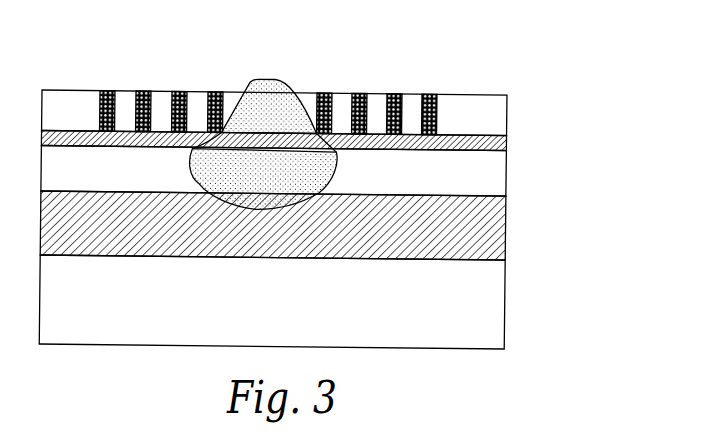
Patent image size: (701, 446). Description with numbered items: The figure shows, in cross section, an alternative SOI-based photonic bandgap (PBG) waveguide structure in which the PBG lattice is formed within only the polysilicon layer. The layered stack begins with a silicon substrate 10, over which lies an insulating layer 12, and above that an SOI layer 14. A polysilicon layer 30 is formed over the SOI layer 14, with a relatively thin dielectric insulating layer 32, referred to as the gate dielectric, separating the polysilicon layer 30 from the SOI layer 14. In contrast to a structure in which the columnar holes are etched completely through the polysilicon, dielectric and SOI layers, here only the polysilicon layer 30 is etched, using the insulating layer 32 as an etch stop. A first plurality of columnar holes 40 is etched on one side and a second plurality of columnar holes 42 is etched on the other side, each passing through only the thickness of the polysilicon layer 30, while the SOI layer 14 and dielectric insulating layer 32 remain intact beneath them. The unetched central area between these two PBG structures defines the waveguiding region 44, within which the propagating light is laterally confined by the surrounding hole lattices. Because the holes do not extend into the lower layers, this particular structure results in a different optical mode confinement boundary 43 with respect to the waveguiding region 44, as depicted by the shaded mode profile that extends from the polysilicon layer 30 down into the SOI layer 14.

The silicon substrate 10 is at (475, 307).
The insulating layer 12 is at (470, 238).
The SOI layer 14 is at (478, 173).
The polysilicon layer 30 is at (478, 113).
The dielectric insulating layer 32 is at (507, 143).
The first plurality of columnar holes 40 is at (98, 81).
The second plurality of columnar holes 42 is at (320, 85).
The optical mode confinement boundary 43 is at (277, 80).
The waveguiding region 44 is at (253, 106).